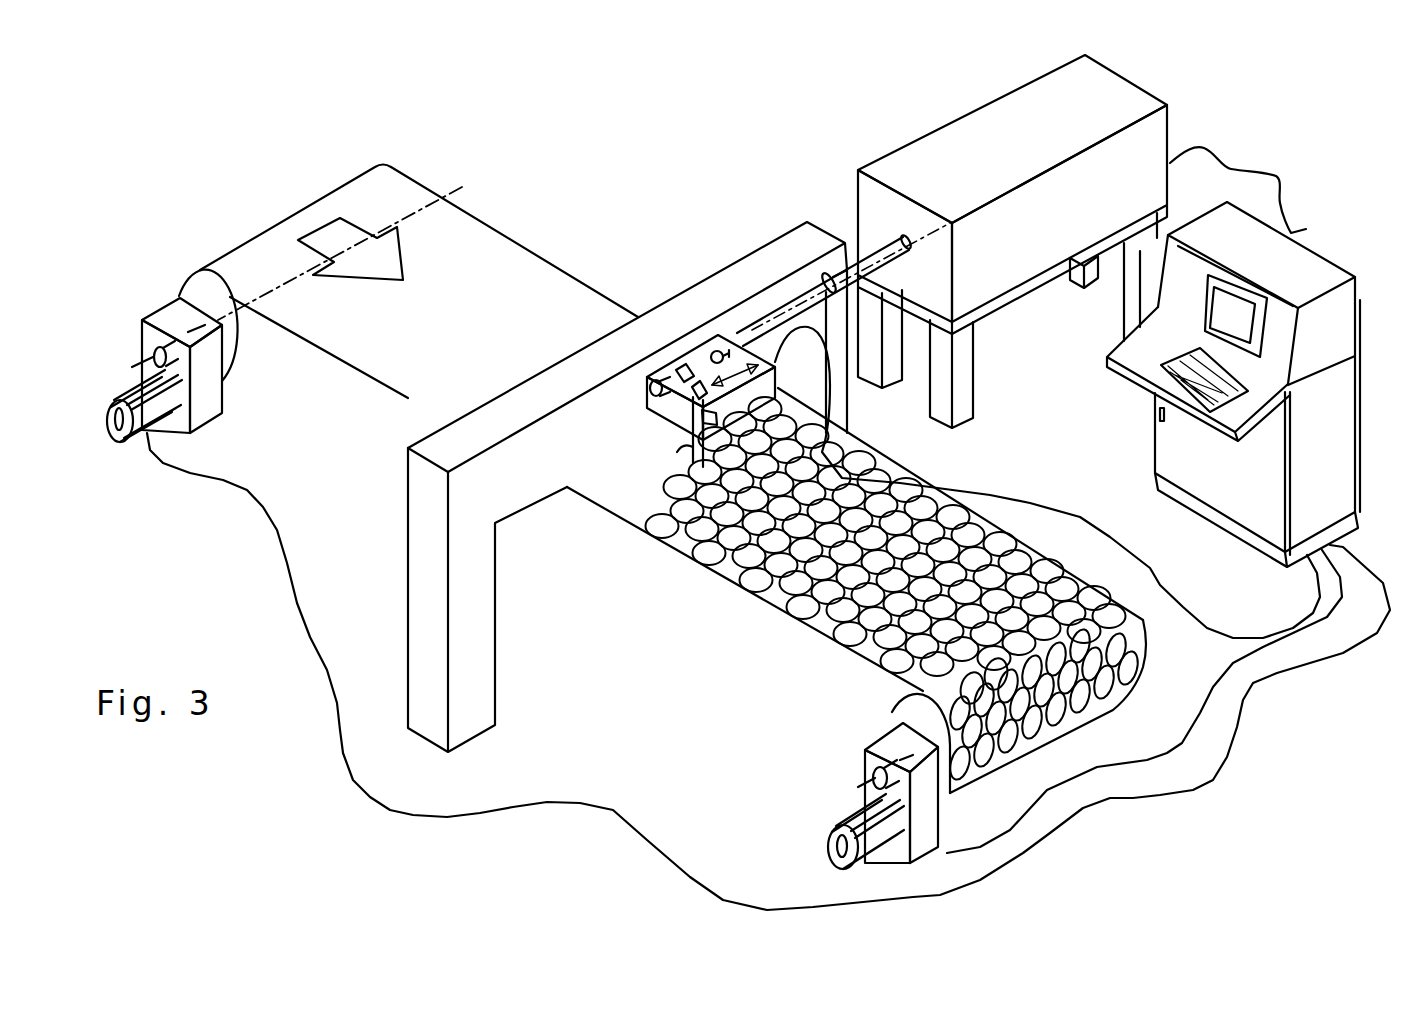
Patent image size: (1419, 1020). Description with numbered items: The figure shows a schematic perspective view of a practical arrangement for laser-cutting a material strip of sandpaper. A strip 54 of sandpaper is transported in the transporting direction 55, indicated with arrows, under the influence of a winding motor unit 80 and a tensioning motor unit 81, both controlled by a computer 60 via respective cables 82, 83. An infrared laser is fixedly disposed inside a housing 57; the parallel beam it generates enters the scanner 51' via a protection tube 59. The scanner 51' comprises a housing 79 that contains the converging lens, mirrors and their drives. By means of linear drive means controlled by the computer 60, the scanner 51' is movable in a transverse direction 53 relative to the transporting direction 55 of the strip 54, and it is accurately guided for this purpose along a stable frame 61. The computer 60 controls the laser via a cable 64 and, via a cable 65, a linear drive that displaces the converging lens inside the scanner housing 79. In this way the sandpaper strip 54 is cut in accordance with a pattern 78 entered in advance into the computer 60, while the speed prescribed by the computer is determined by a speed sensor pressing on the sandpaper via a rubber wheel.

The scanner 51' is at (687, 323).
The transverse direction 53 is at (733, 370).
The strip of sandpaper 54 is at (538, 277).
The transporting direction 55 is at (378, 250).
The housing 57 is at (1000, 130).
The protection tube 59 is at (827, 273).
The computer 60 is at (1335, 442).
The frame 61 is at (430, 477).
The cable 64 is at (1259, 173).
The cable 65 is at (1144, 568).
The pattern 78 is at (795, 612).
The housing 79 is at (663, 412).
The winding motor unit 80 is at (870, 800).
The tensioning motor unit 81 is at (210, 403).
The cable 82 is at (1137, 767).
The cable 83 is at (1097, 813).